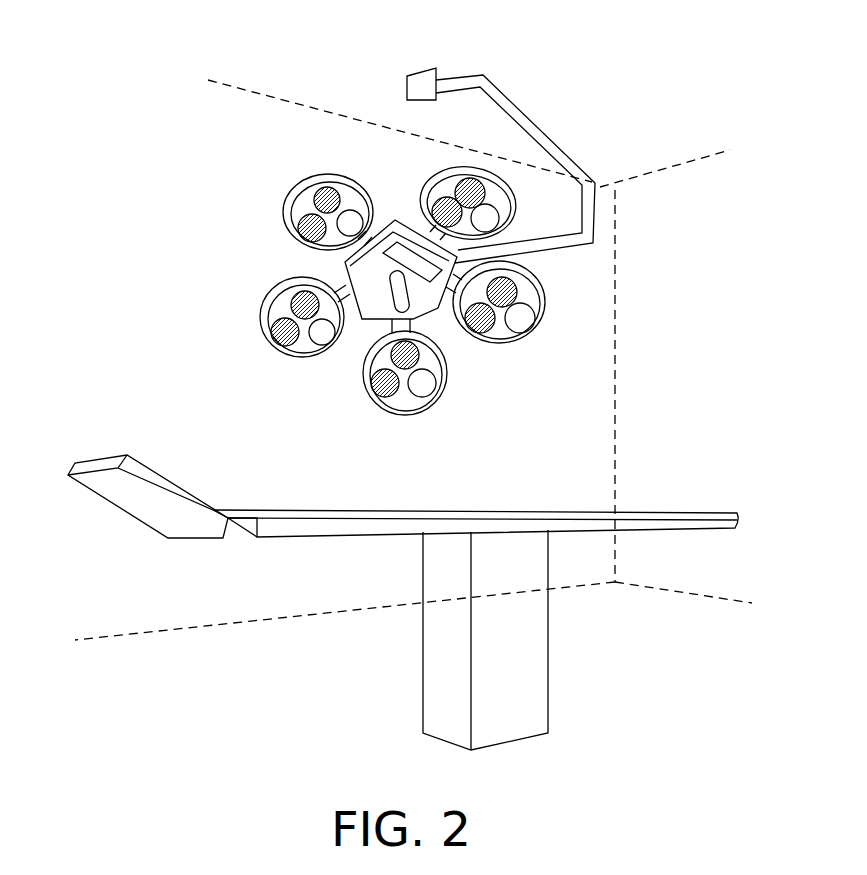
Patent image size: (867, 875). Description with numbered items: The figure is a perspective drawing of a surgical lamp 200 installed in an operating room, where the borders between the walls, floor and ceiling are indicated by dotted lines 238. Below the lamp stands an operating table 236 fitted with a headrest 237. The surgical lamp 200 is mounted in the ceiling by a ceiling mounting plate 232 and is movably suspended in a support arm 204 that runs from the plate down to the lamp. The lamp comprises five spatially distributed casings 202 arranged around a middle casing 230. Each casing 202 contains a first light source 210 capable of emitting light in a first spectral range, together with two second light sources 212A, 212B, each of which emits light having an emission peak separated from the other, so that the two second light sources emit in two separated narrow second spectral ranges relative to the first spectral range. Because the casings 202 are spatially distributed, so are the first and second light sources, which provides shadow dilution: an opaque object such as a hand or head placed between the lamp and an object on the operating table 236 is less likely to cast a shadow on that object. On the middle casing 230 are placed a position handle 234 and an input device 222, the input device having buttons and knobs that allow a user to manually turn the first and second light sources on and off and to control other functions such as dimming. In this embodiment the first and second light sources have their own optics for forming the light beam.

The surgical lamp 200 is at (255, 60).
The casing 202 is at (400, 276).
The support arm 204 is at (547, 138).
The first light source 210 is at (352, 220).
The second light source 212A is at (313, 200).
The second light source 212B is at (302, 228).
The input device 222 is at (403, 252).
The middle casing 230 is at (345, 283).
The ceiling mounting plate 232 is at (420, 83).
The position handle 234 is at (407, 290).
The operating table 236 is at (322, 523).
The headrest 237 is at (157, 512).
The dotted lines 238 is at (680, 165).